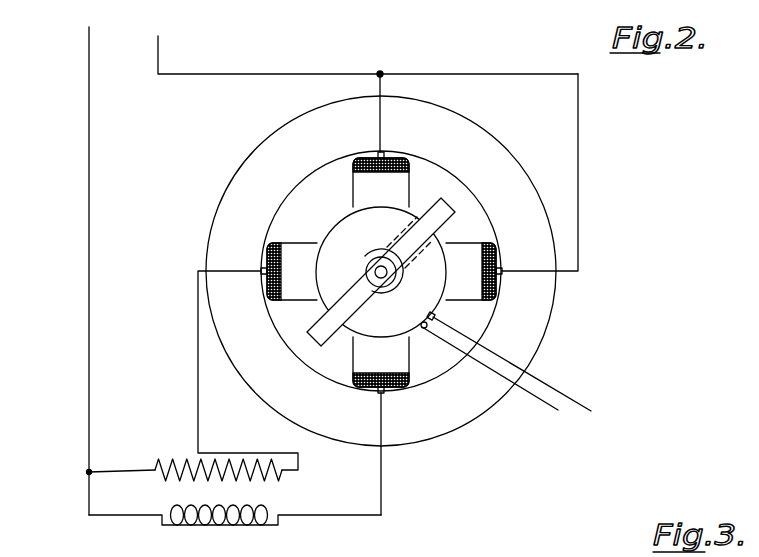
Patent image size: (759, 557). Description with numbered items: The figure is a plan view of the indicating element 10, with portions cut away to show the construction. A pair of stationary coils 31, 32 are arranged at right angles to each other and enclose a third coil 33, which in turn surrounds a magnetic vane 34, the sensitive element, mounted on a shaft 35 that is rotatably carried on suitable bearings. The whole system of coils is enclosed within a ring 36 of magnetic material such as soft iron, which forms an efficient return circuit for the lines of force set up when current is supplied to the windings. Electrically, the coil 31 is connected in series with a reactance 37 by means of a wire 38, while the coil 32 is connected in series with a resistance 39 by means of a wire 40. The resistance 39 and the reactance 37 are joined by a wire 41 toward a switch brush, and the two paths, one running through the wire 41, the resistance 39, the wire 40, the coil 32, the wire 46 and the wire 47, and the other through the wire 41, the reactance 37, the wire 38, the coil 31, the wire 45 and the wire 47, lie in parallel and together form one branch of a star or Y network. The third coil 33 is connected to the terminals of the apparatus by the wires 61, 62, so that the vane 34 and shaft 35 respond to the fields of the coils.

The indicating element 10 is at (560, 322).
The stationary coil 31 is at (405, 358).
The stationary coil 32 is at (296, 246).
The third coil 33 is at (325, 301).
The magnetic vane 34 is at (333, 341).
The shaft 35 is at (372, 291).
The ring 36 is at (457, 420).
The reactance 37 is at (256, 526).
The wire 38 is at (381, 476).
The resistance 39 is at (186, 458).
The wire 40 is at (196, 380).
The wire 41 is at (82, 239).
The wire 45 is at (568, 272).
The wire 46 is at (380, 80).
The wire 47 is at (290, 78).
The wire 61 is at (545, 405).
The wire 62 is at (565, 388).